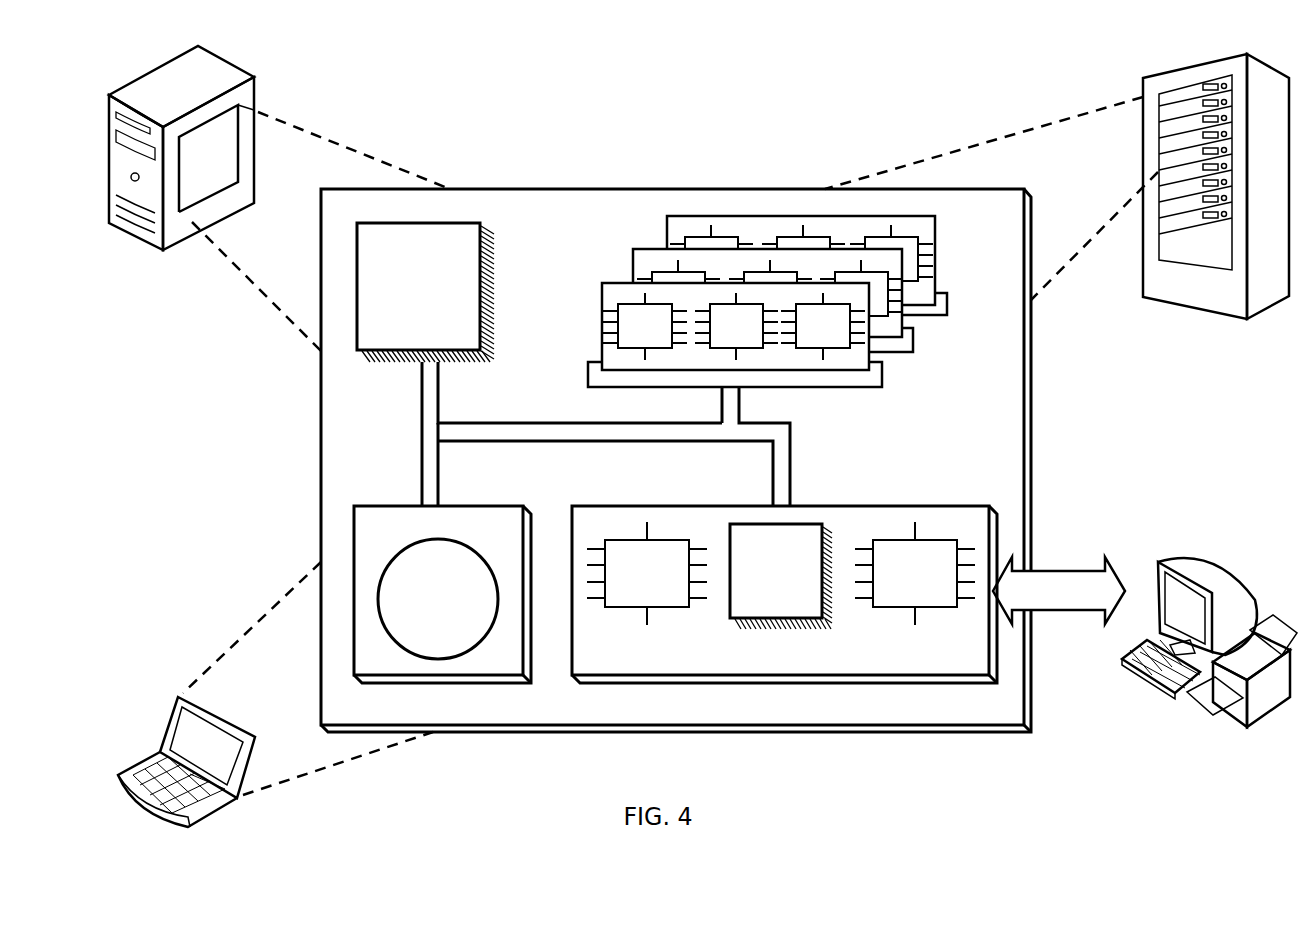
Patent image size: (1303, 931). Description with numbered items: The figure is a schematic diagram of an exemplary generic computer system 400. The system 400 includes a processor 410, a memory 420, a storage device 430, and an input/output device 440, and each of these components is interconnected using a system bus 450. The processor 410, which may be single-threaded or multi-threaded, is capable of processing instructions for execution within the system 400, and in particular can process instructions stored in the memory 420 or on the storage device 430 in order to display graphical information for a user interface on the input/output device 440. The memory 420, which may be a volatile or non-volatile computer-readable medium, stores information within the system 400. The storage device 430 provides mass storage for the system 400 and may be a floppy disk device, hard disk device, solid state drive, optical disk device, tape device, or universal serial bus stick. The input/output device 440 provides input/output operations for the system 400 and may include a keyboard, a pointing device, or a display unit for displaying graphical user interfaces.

The generic computer system 400 is at (672, 63).
The processor 410 is at (469, 344).
The memory 420 is at (941, 351).
The storage device 430 is at (509, 667).
The input/output device 440 is at (1153, 563).
The system bus 450 is at (604, 441).